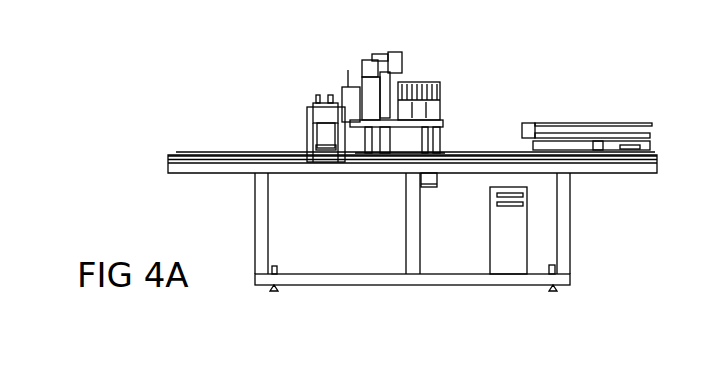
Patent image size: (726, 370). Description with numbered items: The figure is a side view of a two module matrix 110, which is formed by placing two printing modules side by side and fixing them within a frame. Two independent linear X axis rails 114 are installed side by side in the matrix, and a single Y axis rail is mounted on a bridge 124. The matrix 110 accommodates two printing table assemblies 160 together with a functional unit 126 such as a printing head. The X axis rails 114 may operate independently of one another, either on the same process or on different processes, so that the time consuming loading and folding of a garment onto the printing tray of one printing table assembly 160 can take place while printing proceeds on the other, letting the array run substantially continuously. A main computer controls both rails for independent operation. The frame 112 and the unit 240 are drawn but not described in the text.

The two module matrix 110 is at (653, 80).
The table frame 112 is at (258, 207).
The linear X axis rail 114 is at (468, 152).
The bridge 124 is at (307, 128).
The functional unit 126 is at (347, 102).
The printing table assembly 160 is at (598, 122).
The controller 240 is at (503, 230).